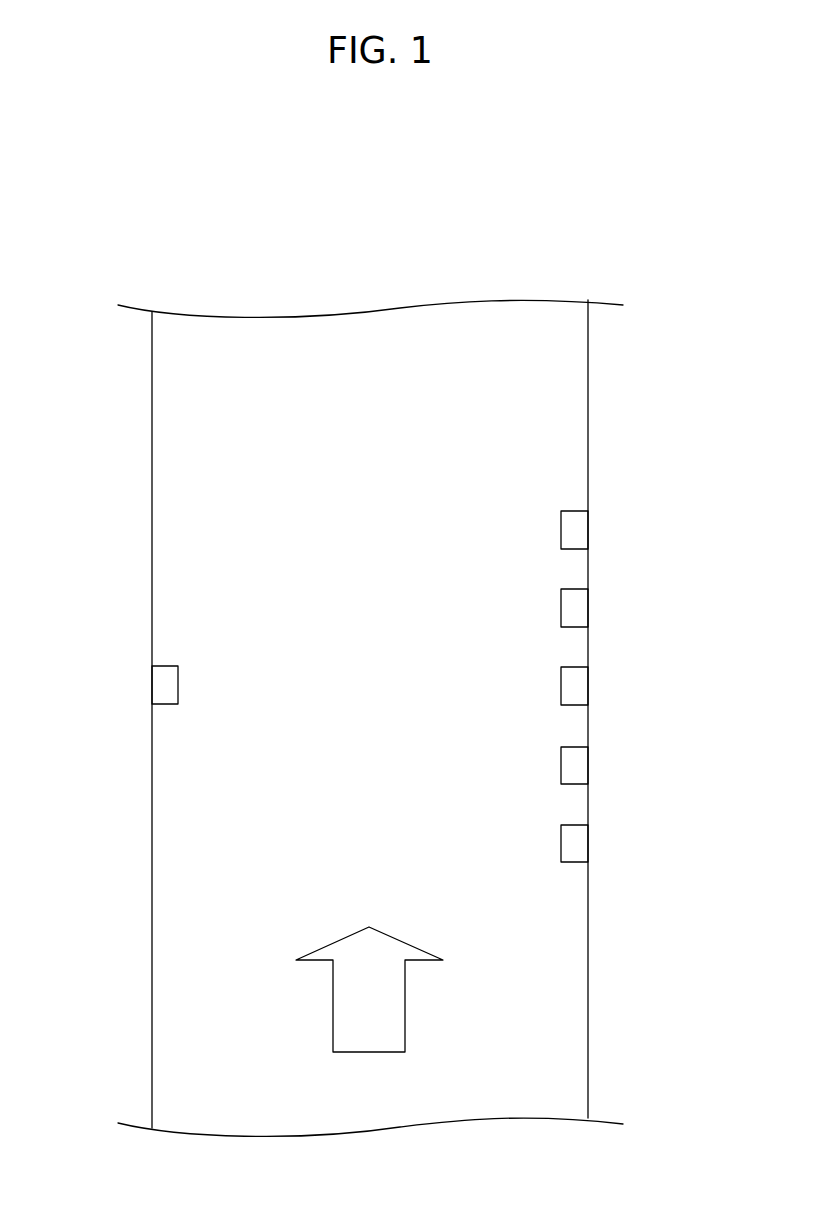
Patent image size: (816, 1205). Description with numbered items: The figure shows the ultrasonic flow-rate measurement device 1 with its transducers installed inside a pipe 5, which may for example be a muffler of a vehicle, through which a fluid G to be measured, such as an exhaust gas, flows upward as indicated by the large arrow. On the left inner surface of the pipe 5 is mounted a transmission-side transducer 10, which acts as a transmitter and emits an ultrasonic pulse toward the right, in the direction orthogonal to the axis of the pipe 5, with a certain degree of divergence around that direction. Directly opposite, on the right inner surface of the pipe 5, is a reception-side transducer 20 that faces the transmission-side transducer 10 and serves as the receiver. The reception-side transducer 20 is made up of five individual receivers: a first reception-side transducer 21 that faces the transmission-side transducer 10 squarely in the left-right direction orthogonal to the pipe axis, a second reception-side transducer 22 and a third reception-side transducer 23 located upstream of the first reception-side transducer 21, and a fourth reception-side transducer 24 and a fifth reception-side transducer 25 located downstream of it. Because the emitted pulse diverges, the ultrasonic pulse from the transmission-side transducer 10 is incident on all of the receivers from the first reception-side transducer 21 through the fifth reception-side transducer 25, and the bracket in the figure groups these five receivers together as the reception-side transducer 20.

The ultrasonic flow-rate measurement device 1 is at (602, 233).
The pipe 5 is at (152, 893).
The transmission-side transducer 10 is at (163, 690).
The reception-side transducer 20 is at (680, 511).
The first reception-side transducer 21 is at (573, 693).
The second reception-side transducer 22 is at (573, 771).
The third reception-side transducer 23 is at (573, 849).
The fourth reception-side transducer 24 is at (573, 616).
The fifth reception-side transducer 25 is at (573, 538).